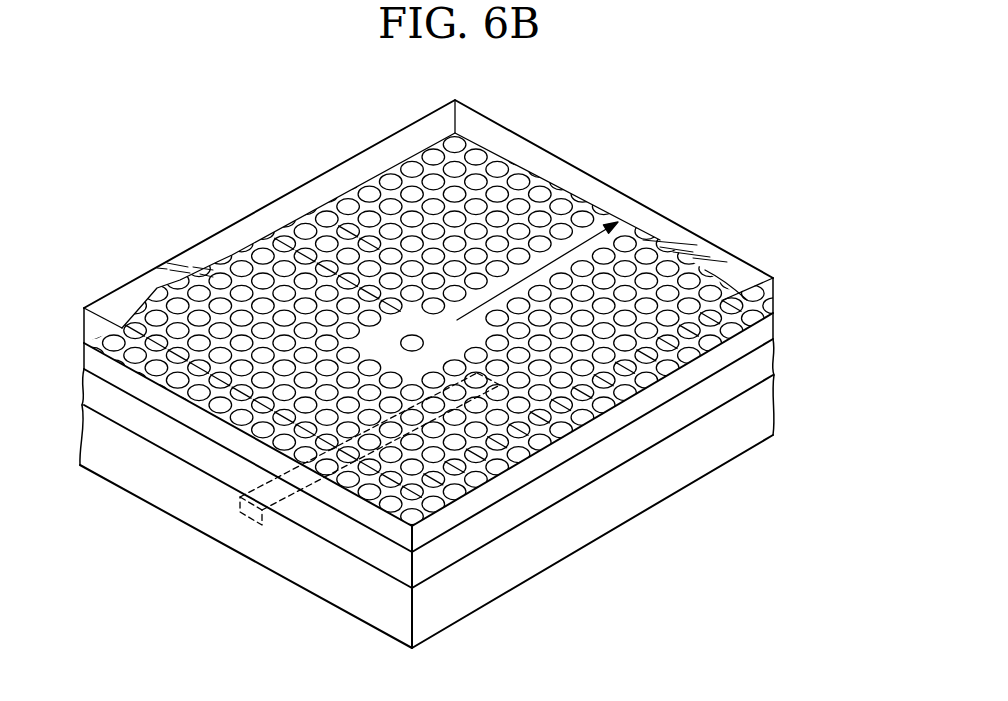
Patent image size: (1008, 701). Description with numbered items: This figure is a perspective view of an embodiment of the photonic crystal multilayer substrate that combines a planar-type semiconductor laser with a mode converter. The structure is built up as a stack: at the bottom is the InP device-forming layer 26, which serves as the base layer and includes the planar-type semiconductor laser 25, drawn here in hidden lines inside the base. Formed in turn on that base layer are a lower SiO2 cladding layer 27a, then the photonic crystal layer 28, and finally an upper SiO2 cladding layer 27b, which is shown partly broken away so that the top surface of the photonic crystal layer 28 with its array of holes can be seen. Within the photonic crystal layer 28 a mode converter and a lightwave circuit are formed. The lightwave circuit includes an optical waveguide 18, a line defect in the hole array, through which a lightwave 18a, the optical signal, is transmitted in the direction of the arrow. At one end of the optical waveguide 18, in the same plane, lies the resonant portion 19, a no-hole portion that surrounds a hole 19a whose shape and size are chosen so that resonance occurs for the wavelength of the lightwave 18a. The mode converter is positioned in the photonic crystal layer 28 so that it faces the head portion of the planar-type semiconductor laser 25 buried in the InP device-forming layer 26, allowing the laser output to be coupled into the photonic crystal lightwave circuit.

The optical waveguide 18 is at (542, 262).
The lightwave 18a is at (604, 222).
The resonant portion 19 is at (412, 335).
The hole 19a is at (293, 250).
The planar-type semiconductor laser 25 is at (307, 503).
The InP device-forming layer 26 is at (653, 483).
The SiO2 cladding layer 27a is at (767, 358).
The SiO2 cladding layer 27b is at (770, 296).
The photonic crystal layer 28 is at (760, 336).